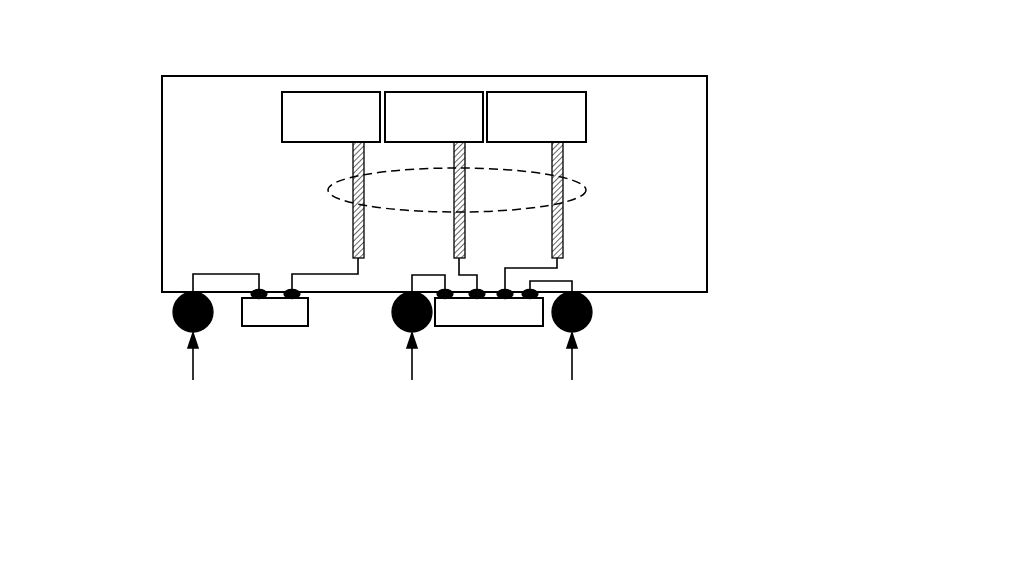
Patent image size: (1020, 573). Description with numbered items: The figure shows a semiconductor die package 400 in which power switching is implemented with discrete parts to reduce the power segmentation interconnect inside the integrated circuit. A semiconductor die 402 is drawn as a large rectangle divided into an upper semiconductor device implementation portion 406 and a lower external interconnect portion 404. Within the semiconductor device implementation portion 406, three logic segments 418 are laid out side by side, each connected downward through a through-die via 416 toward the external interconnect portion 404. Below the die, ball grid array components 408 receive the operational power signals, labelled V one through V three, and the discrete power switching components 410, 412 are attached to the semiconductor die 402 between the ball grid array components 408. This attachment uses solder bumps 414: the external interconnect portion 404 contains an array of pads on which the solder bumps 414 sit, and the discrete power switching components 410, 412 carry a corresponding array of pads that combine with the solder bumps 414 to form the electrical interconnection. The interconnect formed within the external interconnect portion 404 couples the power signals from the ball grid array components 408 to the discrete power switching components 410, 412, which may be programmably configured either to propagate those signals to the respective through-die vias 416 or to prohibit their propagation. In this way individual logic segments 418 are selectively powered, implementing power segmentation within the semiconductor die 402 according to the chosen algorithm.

The semiconductor die package 400 is at (748, 79).
The semiconductor die 402 is at (572, 76).
The external interconnect portion 404 is at (145, 258).
The semiconductor device implementation portion 406 is at (145, 76).
The ball grid array components 408 is at (592, 310).
The discrete power switching component 410 is at (280, 326).
The discrete power switching component 412 is at (453, 326).
The solder bumps 414 is at (297, 295).
The through-die vias 416 is at (586, 191).
The logic segments 418 is at (586, 120).